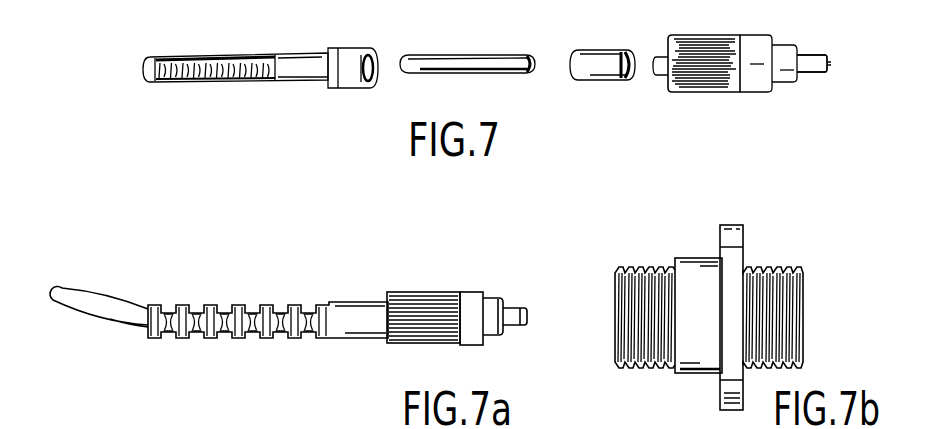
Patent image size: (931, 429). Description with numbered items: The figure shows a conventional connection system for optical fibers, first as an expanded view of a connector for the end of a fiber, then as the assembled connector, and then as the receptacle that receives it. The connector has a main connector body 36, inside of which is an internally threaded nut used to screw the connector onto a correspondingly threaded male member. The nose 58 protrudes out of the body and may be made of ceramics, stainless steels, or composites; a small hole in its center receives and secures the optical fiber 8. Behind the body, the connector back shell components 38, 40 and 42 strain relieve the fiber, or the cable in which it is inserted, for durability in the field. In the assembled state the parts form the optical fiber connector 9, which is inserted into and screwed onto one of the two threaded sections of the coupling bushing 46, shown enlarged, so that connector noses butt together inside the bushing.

In FIG. 7, the connector back shell component 42 is at (316, 52).
In FIG. 7, the connector back shell component 40 is at (456, 55).
In FIG. 7, the connector back shell component 38 is at (600, 50).
In FIG. 7, the main connector body 36 is at (731, 93).
In FIG. 7, the nose 58 is at (811, 55).
In FIG. 7, the optical fiber 8 is at (831, 63).
In FIG. 7A, the optical fiber connector 9 is at (390, 341).
In FIG. 7B, the coupling bushing 46 is at (673, 270).